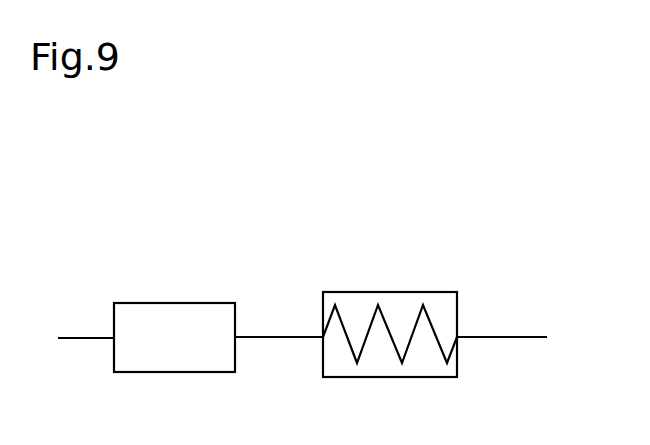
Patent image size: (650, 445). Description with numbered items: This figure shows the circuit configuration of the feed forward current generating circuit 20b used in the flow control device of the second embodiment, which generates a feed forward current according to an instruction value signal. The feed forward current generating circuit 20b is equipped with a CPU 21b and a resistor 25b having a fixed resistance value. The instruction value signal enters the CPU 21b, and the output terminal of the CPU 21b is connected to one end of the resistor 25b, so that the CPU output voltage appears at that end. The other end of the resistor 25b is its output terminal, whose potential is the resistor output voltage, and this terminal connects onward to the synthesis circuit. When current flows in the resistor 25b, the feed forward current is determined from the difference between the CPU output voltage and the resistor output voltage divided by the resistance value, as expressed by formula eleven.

The feed forward current generating circuit 20b is at (528, 258).
The CPU 21b is at (133, 303).
The resistor 25b is at (342, 292).